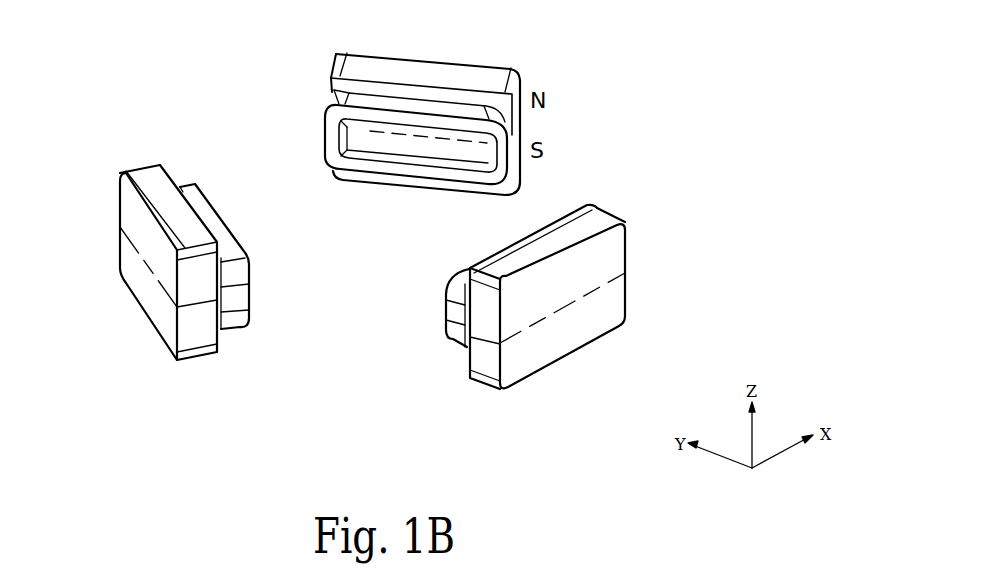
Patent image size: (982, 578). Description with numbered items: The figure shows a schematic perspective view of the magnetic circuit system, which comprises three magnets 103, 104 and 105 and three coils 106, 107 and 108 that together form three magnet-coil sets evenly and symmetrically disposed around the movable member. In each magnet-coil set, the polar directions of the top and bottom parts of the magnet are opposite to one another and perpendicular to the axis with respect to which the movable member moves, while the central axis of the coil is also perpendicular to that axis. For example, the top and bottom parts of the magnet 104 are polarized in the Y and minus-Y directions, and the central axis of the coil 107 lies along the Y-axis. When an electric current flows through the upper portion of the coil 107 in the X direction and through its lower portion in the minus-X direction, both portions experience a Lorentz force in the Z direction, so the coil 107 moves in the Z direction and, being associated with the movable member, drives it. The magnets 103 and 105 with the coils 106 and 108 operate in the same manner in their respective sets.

The magnet 103 is at (167, 202).
The magnet 104 is at (580, 233).
The magnet 105 is at (388, 65).
The coil 106 is at (240, 303).
The coil 107 is at (457, 323).
The coil 108 is at (375, 102).